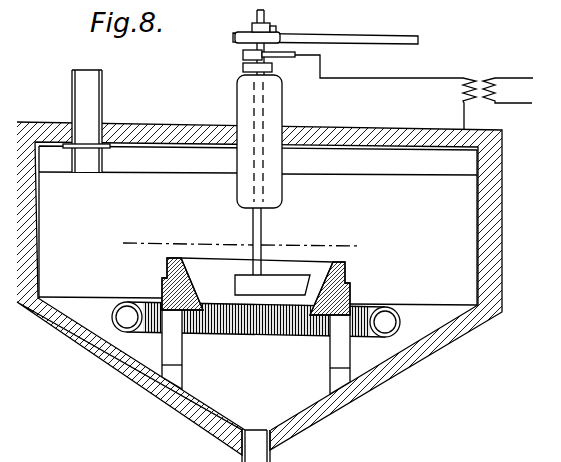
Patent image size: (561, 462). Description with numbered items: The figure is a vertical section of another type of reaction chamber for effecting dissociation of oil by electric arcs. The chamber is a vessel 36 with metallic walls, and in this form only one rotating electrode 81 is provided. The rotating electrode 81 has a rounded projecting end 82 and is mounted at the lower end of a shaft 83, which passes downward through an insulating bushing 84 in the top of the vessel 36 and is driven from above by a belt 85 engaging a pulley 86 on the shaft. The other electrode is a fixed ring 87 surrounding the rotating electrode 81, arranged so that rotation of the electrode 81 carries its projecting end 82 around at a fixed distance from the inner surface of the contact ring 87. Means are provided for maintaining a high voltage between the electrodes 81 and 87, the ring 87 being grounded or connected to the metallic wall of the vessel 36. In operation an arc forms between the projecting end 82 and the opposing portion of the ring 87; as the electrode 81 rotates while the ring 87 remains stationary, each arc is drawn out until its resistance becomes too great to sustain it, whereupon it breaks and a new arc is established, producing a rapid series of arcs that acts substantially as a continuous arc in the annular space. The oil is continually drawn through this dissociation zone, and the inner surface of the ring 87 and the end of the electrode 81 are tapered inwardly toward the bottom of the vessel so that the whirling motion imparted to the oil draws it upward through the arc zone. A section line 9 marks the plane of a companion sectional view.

The vessel 36 is at (503, 225).
The rotating electrode 81 is at (288, 283).
The rounded projecting end 82 is at (349, 273).
The shaft 83 is at (262, 239).
The insulating bushing 84 is at (268, 118).
The belt 85 is at (349, 39).
The pulley 86 is at (243, 34).
The fixed ring 87 is at (352, 297).
The section line 9 is at (241, 244).